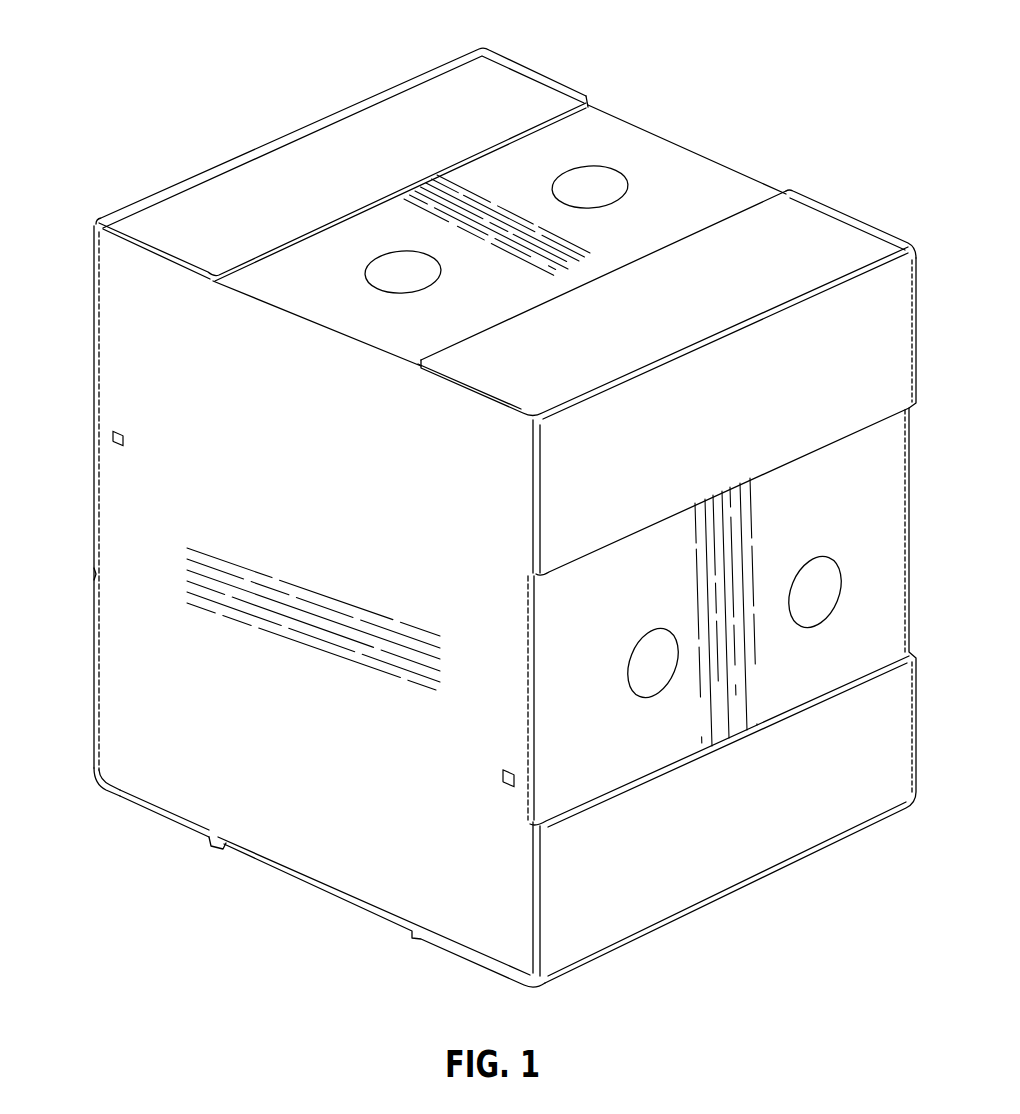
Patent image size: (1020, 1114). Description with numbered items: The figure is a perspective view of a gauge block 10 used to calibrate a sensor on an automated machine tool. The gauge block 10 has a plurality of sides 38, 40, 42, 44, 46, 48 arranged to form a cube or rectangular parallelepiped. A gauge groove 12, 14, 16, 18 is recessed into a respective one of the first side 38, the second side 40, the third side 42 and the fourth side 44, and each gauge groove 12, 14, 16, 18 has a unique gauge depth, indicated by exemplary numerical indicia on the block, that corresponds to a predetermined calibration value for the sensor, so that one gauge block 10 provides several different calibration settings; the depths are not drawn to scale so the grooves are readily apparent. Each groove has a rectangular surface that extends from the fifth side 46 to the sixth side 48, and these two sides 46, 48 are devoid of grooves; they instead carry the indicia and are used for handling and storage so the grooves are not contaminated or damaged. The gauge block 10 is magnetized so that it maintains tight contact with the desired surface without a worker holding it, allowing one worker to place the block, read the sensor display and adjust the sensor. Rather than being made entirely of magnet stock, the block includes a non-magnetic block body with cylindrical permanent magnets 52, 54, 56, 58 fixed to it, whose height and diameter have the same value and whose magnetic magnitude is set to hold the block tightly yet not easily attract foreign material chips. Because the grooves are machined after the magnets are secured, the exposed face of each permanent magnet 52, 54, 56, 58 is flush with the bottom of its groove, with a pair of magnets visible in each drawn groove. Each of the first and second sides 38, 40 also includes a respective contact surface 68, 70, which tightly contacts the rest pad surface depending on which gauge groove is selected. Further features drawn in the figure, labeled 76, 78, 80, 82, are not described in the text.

The gauge block 10 is at (300, 58).
The gauge groove 12 is at (596, 132).
The gauge groove 14 is at (886, 498).
The gauge groove 16 is at (278, 876).
The gauge groove 18 is at (90, 443).
The first side 38 is at (218, 188).
The second side 40 is at (912, 323).
The third side 42 is at (173, 829).
The fourth side 44 is at (88, 751).
The fifth side 46 is at (389, 893).
The sixth side 48 is at (853, 218).
The permanent magnet 52 is at (430, 275).
The permanent magnet 54 is at (619, 184).
The permanent magnet 56 is at (641, 695).
The permanent magnet 58 is at (833, 587).
The contact surface 68 is at (337, 165).
The contact surface 70 is at (729, 422).
The recessed surface 76 is at (669, 208).
The recessed surface 78 is at (602, 600).
The notch 80 is at (241, 853).
The notch 82 is at (92, 576).